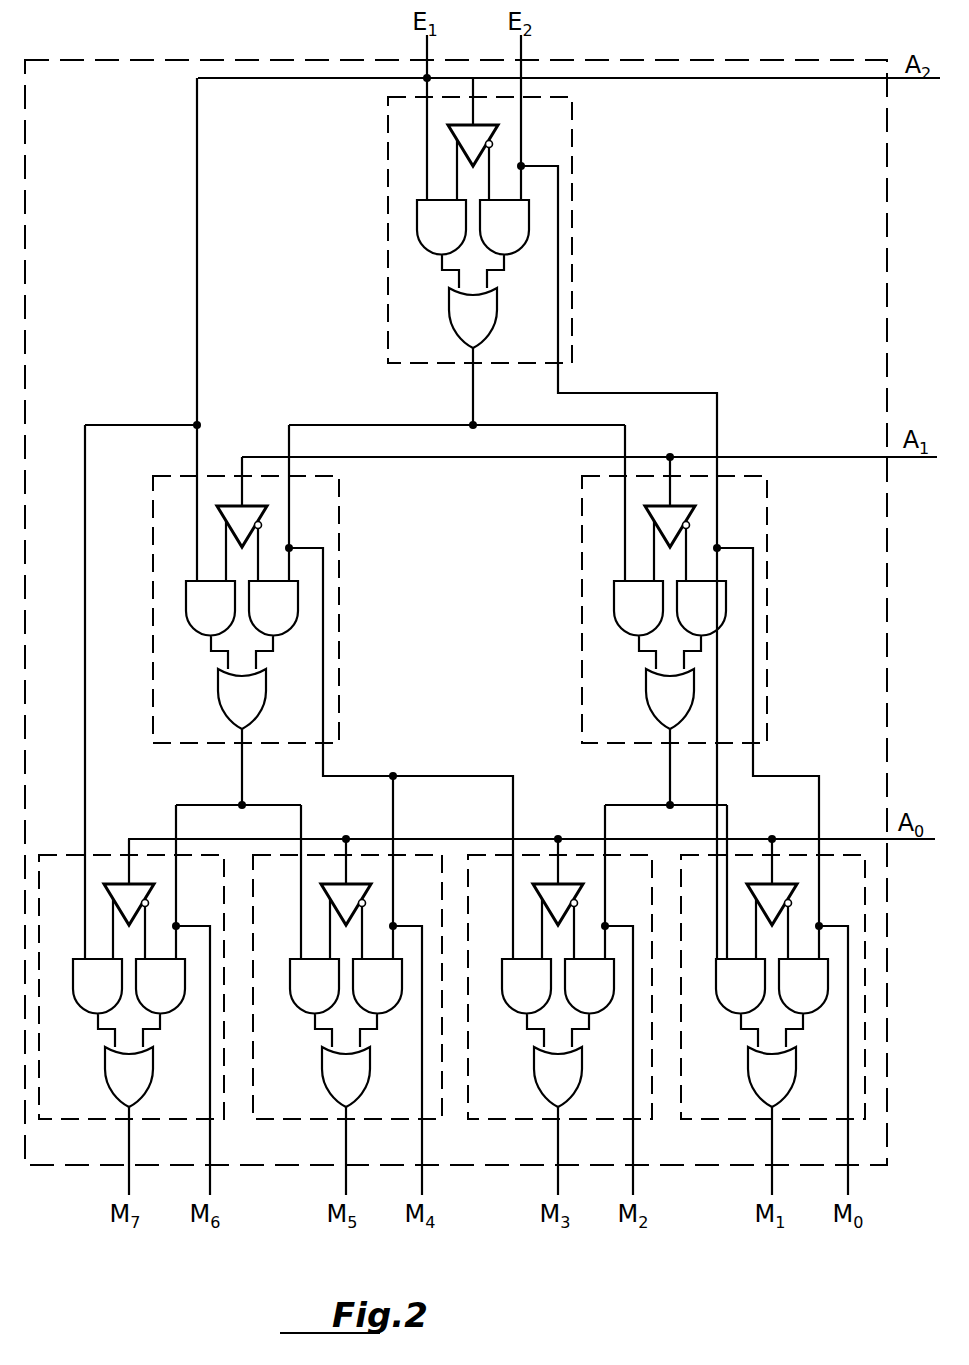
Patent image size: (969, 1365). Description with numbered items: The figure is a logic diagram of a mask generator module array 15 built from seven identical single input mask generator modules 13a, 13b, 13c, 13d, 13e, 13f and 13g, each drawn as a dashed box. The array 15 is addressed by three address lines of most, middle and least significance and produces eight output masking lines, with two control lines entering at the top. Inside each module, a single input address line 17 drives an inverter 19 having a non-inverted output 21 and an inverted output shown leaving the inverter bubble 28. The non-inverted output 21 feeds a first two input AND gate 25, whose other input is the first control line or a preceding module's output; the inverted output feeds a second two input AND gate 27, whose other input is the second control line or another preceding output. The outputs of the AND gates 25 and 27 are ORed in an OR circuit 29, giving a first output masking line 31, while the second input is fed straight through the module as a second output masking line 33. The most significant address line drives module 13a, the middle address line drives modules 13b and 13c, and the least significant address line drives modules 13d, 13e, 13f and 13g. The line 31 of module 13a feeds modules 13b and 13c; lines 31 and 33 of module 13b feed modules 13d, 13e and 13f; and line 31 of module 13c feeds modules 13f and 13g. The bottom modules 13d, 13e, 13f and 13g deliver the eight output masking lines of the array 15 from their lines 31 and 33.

The mask generator module array 15 is at (708, 60).
The single input address line 17 is at (520, 481).
The inverter 19 is at (423, 518).
The non-inverted output 21 is at (401, 549).
The first two input AND gate 25 is at (409, 624).
The second two input AND gate 27 is at (486, 624).
The inverted signal line 28 is at (492, 544).
The OR circuit 29 is at (430, 697).
The first output masking line 31 is at (465, 771).
The second output masking line 33 is at (531, 678).
The single input mask generator module 13a is at (573, 206).
The single input mask generator module 13b is at (340, 624).
The single input mask generator module 13c is at (768, 628).
The single input mask generator module 13d is at (75, 1119).
The single input mask generator module 13e is at (303, 1119).
The single input mask generator module 13f is at (518, 1119).
The single input mask generator module 13g is at (748, 1142).